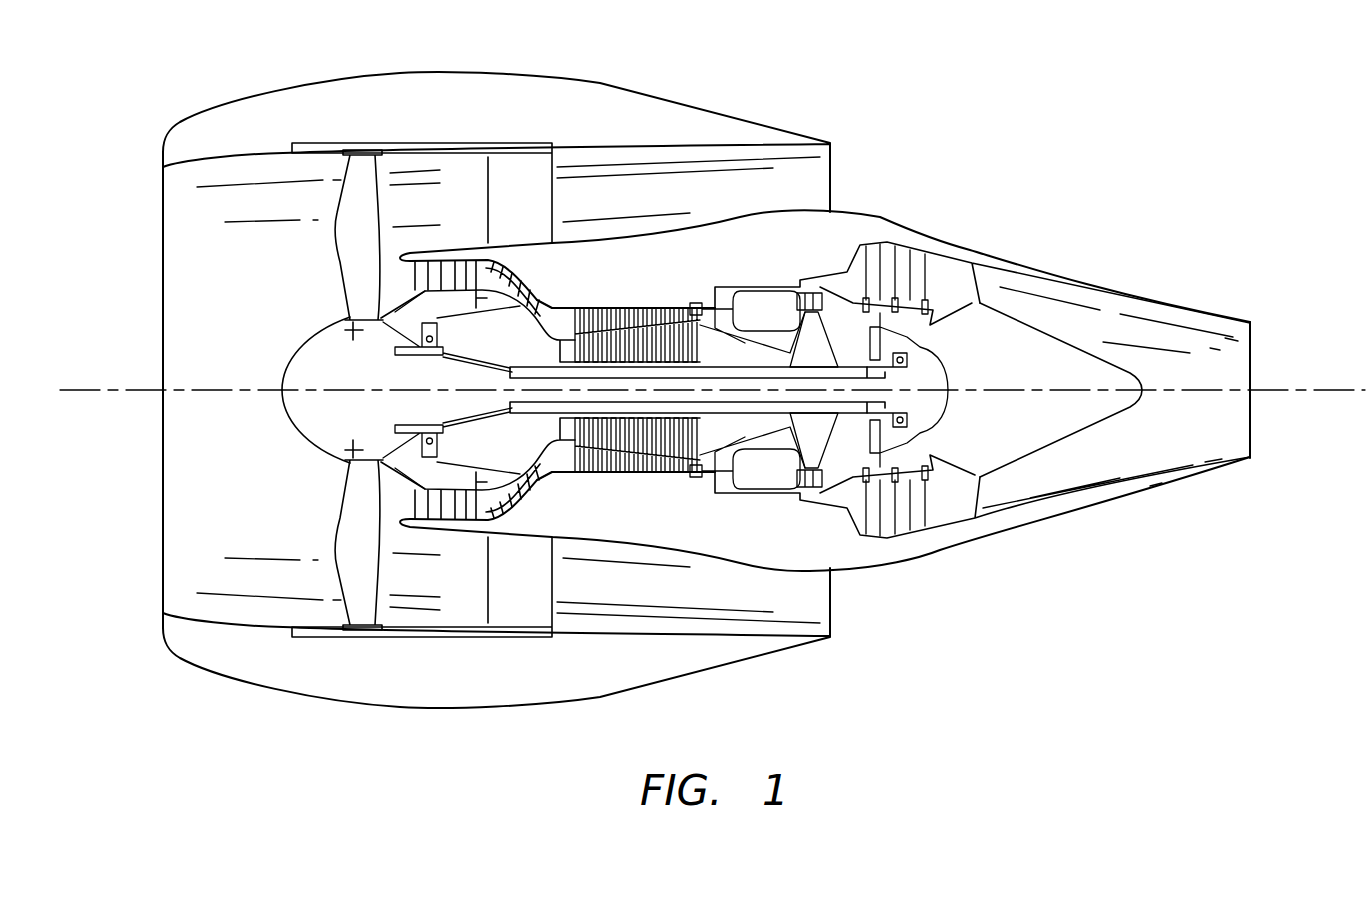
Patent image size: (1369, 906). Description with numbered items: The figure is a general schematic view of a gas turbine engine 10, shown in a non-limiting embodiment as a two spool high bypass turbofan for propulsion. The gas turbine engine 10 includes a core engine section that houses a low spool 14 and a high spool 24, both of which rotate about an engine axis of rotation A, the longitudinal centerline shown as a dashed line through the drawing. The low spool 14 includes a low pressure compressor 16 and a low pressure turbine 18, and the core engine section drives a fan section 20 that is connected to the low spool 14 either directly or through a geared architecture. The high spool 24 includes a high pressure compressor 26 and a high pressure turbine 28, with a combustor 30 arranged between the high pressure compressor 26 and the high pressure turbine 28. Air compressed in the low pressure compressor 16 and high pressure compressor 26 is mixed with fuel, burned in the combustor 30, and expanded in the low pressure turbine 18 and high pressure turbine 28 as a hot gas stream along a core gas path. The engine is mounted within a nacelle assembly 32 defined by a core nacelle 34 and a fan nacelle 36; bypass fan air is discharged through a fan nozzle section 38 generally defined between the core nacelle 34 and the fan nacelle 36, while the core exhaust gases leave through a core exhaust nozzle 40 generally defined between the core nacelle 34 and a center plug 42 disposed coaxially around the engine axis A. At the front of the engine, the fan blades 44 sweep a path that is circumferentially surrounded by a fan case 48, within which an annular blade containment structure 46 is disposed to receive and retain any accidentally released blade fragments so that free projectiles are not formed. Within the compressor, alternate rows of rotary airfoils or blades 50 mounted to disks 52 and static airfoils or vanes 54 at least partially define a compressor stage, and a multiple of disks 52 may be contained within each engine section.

The gas turbine engine 10 is at (964, 164).
The low spool 14 is at (721, 377).
The low pressure compressor 16 is at (458, 527).
The low pressure turbine 18 is at (870, 545).
The fan section 20 is at (319, 331).
The high spool 24 is at (634, 357).
The high pressure compressor 26 is at (637, 423).
The high pressure turbine 28 is at (812, 500).
The combustor 30 is at (765, 472).
The nacelle assembly 32 is at (537, 361).
The core nacelle 34 is at (806, 230).
The fan nacelle 36 is at (606, 113).
The fan nozzle section 38 is at (814, 603).
The core exhaust nozzle 40 is at (1113, 462).
The center plug 42 is at (1040, 330).
The fan blades 44 is at (352, 237).
The annular blade containment structure 46 is at (360, 150).
The fan case 48 is at (408, 150).
The blades 50 is at (632, 310).
The disks 52 is at (697, 318).
The vanes 54 is at (592, 305).
The engine axis of rotation A is at (1302, 398).